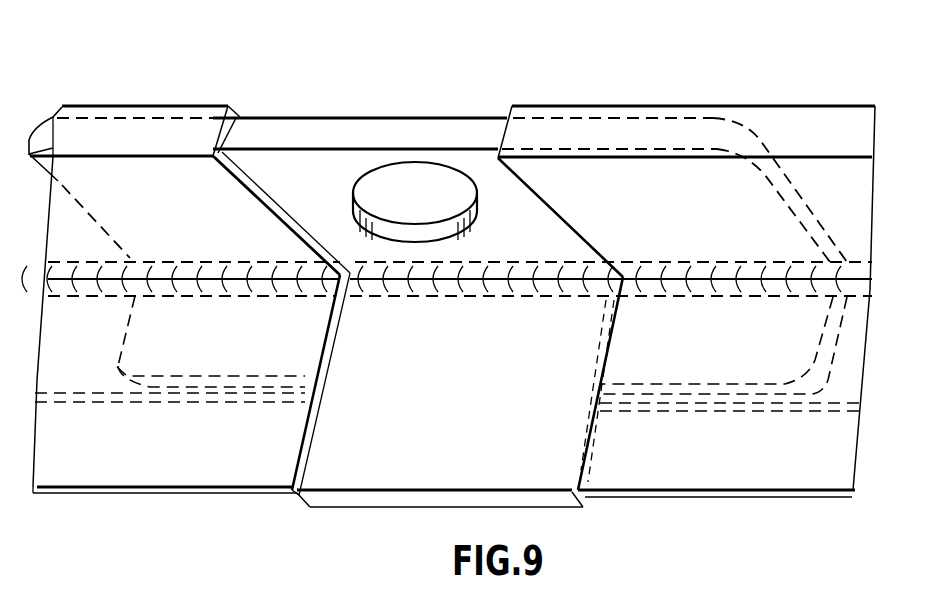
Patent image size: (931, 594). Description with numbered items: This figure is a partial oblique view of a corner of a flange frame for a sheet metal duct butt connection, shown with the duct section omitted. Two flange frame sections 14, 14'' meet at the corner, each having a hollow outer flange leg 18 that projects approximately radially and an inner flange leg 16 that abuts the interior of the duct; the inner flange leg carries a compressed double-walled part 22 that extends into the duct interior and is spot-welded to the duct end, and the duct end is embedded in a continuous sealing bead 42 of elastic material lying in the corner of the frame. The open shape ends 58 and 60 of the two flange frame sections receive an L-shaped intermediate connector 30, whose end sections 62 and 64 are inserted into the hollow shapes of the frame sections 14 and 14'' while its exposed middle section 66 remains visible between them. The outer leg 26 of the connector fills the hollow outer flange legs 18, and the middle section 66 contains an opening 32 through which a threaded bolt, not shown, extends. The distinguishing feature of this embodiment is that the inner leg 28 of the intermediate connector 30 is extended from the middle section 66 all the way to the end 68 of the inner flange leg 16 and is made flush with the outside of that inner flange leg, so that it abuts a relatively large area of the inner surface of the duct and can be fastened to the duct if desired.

The flange frame section 14 is at (135, 83).
The end section of intermediate connector 62 is at (160, 117).
The outer leg of intermediate connector 26 is at (53, 150).
The end of flange frame 58 is at (228, 104).
The outer flange leg 18 is at (238, 215).
The middle section of intermediate connector 66 is at (309, 133).
The intermediate connector 30 is at (379, 117).
The opening 32 is at (433, 177).
The end of flange frame section 60 is at (508, 136).
The end section of intermediate connector 64 is at (617, 117).
The flange frame section 14'' is at (686, 254).
The sealing bead 42 is at (107, 292).
The inner flange leg 16 is at (210, 447).
The end of inner flange leg 68 is at (148, 495).
The compressed double-walled part 22 is at (258, 470).
The inner leg of intermediate connector 28 is at (397, 480).